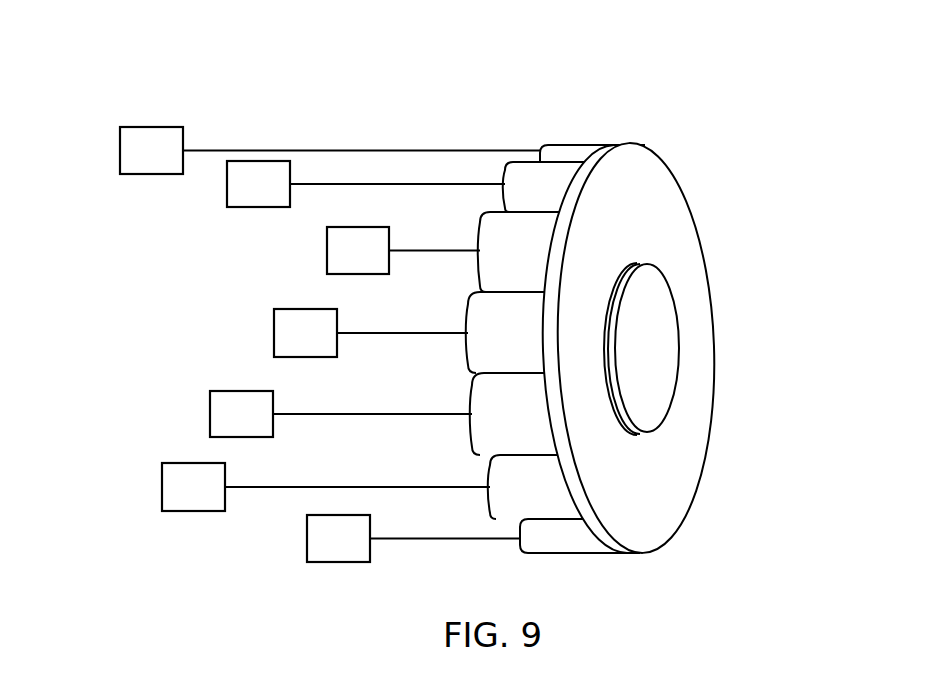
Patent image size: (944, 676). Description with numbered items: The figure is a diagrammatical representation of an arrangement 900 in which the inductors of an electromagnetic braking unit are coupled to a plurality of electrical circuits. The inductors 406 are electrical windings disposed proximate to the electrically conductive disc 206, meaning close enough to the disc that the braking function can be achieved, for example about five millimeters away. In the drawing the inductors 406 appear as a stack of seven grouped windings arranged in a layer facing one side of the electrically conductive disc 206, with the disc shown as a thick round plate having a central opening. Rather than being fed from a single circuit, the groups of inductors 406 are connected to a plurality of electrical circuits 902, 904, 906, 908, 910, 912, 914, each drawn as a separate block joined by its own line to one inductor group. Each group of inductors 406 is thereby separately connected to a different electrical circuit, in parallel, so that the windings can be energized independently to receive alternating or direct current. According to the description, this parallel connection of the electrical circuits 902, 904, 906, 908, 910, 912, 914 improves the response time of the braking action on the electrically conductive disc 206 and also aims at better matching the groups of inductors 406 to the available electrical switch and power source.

The motor assembly with electronic controllers 900 is at (712, 64).
The inductors 406 is at (578, 150).
The electrically conductive disc 206 is at (696, 256).
The electrical circuit 902 is at (120, 150).
The electrical circuit 904 is at (227, 187).
The electrical circuit 906 is at (327, 251).
The electrical circuit 908 is at (274, 333).
The electrical circuit 910 is at (210, 414).
The electrical circuit 912 is at (162, 487).
The electrical circuit 914 is at (307, 538).